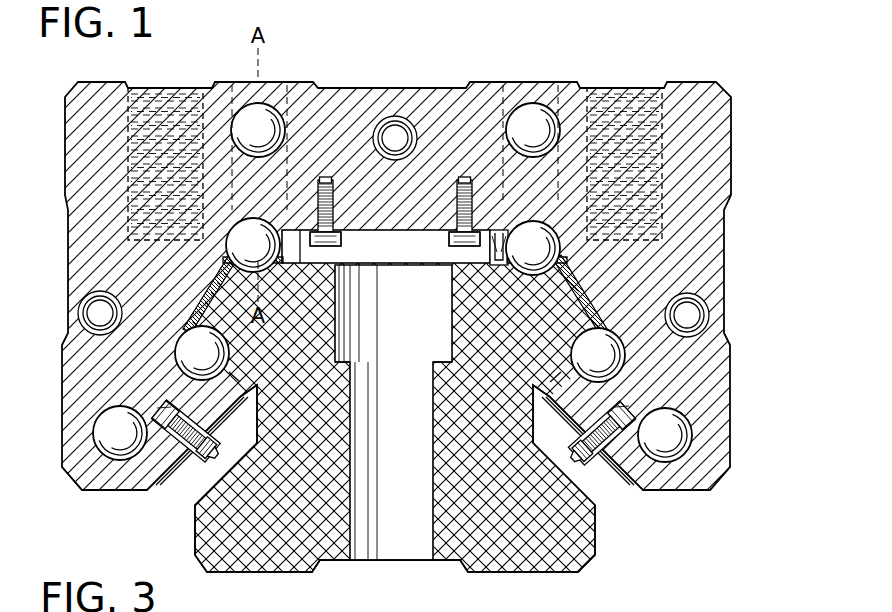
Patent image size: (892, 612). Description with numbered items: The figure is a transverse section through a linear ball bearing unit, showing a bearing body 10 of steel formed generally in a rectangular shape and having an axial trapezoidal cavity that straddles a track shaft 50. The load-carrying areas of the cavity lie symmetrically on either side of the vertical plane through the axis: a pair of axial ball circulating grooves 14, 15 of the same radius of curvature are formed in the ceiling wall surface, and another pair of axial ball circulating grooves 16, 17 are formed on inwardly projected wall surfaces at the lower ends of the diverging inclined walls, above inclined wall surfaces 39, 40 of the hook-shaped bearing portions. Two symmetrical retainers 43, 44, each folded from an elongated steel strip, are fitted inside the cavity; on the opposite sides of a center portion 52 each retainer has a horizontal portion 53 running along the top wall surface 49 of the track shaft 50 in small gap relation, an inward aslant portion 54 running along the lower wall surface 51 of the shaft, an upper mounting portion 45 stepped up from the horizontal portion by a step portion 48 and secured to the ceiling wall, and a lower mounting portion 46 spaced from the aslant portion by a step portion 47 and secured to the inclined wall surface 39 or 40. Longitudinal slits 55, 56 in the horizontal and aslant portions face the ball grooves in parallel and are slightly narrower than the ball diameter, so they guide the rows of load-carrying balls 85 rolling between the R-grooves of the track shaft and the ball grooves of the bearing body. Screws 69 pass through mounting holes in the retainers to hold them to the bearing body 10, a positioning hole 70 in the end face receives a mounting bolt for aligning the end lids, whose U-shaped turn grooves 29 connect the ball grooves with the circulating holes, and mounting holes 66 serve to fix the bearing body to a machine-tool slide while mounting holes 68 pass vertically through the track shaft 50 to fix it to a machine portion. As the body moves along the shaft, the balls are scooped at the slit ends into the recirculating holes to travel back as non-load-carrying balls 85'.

The bearing body 10 is at (404, 72).
The axial ball circulating groove 14 is at (537, 222).
The axial ball circulating groove 15 is at (254, 220).
The axial ball circulating groove 16 is at (626, 413).
The axial ball circulating groove 17 is at (160, 413).
The U-shaped turn groove 29 is at (283, 116).
The inclined wall surface 39 is at (620, 465).
The inclined wall surface 40 is at (150, 482).
The retainer 43 is at (620, 470).
The retainer 44 is at (173, 465).
The upper mounting portion 45 is at (443, 232).
The lower mounting portion 46 is at (226, 428).
The step portion 47 is at (258, 404).
The step portion 48 is at (489, 262).
The top wall surface 49 is at (296, 278).
The track shaft 50 is at (290, 558).
The lower wall surface 51 is at (254, 374).
The center portion 52 is at (213, 284).
The horizontal portion 53 is at (492, 230).
The inward aslant portion 54 is at (234, 368).
The longitudinal slit 55 is at (250, 272).
The longitudinal slit 56 is at (186, 327).
The mounting hole 66 is at (201, 115).
The mounting hole 68 is at (433, 470).
The screw 69 is at (346, 240).
The positioning hole 70 is at (334, 215).
The load-carrying ball 85 is at (398, 325).
The non-load-carrying ball 85' is at (362, 255).